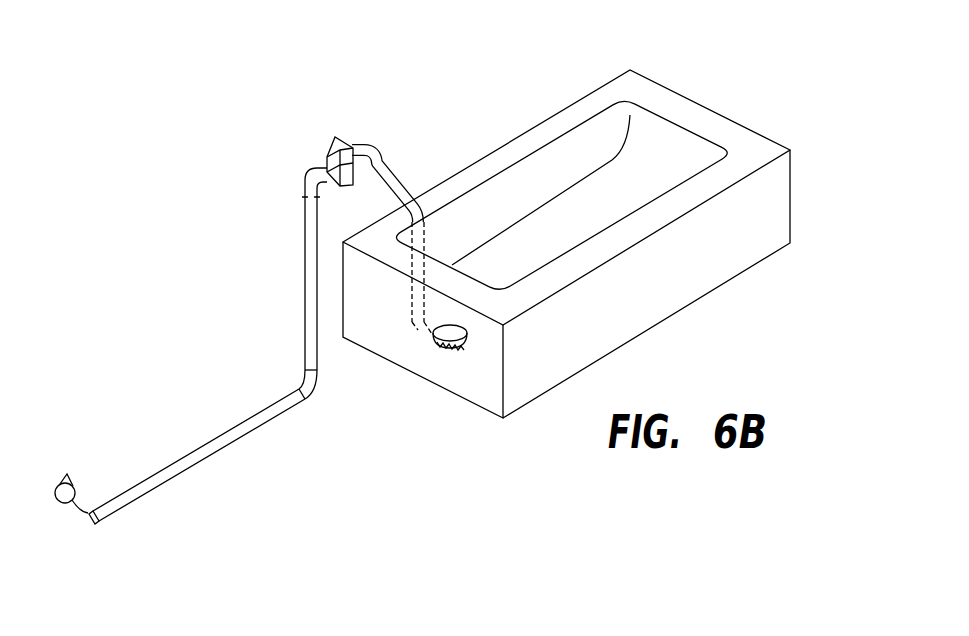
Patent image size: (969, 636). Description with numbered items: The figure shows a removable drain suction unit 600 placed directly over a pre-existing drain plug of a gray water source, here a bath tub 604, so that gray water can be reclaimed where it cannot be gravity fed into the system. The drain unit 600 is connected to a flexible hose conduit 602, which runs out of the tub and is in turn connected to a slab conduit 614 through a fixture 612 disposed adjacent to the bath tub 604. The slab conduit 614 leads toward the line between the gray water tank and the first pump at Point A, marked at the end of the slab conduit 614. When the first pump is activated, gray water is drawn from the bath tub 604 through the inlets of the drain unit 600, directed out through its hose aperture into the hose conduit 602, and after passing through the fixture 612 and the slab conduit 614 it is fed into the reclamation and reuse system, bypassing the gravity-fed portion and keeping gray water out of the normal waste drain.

The drain suction unit 600 is at (460, 353).
The flexible hose conduit 602 is at (378, 192).
The bath tub 604 is at (665, 150).
The fixture 612 is at (330, 137).
The slab conduit 614 is at (227, 430).